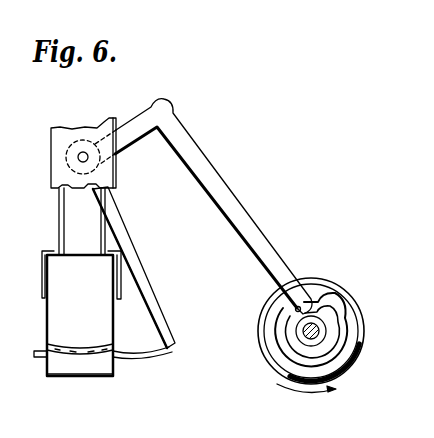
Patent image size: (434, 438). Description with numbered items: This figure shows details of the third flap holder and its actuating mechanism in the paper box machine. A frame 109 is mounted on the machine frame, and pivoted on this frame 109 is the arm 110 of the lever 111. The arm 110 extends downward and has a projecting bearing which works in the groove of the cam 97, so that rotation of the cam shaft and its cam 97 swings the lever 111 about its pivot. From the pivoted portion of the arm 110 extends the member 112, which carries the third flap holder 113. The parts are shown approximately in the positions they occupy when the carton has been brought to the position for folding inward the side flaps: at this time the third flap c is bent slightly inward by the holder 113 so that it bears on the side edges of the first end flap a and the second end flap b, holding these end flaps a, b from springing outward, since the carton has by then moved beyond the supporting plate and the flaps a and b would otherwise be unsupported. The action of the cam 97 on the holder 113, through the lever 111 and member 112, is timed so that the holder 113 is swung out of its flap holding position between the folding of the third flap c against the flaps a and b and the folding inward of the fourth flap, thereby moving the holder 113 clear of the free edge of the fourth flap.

The cam 97 is at (323, 283).
The frame 109 is at (78, 158).
The arm 110 is at (117, 142).
The lever 111 is at (202, 152).
The member 112 is at (147, 281).
The third flap holder 113 is at (153, 356).
The first end flap a is at (97, 346).
The second end flap b is at (63, 347).
The third flap c is at (68, 375).